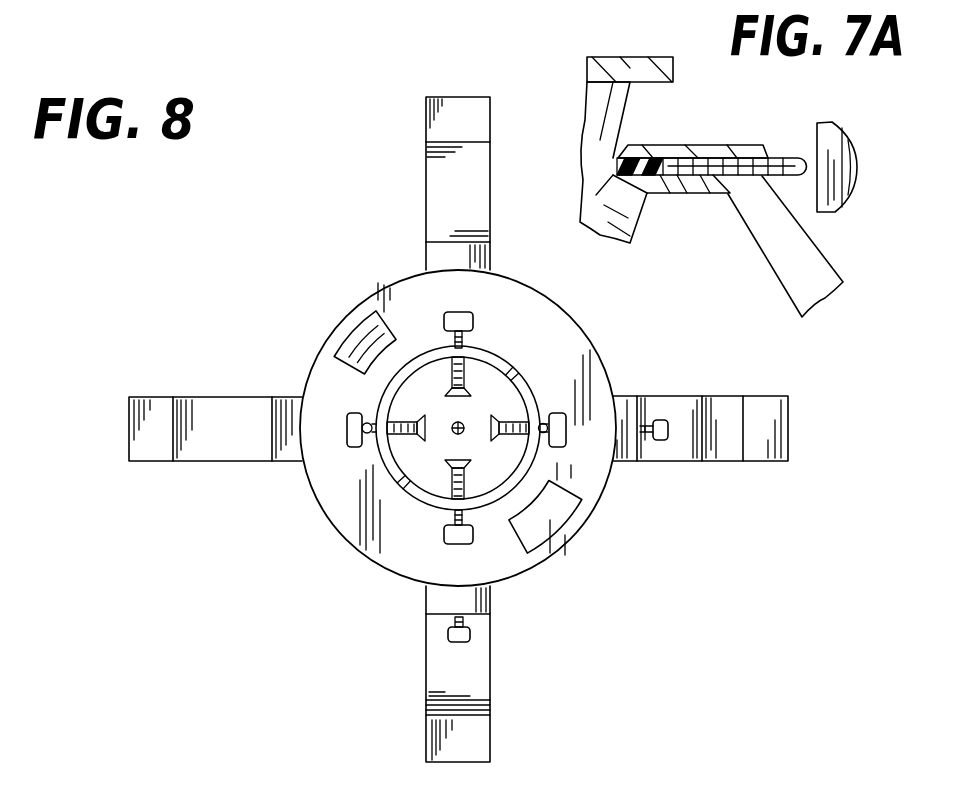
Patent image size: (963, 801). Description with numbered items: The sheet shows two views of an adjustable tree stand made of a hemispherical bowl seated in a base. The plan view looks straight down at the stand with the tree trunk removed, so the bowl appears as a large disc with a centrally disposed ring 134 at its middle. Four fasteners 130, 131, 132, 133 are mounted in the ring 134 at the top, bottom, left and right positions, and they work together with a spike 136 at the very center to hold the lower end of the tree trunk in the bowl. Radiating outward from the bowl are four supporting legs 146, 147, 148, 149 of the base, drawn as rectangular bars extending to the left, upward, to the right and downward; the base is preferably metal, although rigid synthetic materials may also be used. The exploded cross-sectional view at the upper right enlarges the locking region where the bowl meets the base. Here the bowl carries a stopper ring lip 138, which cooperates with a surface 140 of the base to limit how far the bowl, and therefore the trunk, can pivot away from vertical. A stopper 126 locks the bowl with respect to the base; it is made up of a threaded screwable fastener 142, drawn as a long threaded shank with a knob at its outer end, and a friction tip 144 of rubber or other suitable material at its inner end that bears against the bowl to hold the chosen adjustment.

In FIG. 7A, the stopper 126 is at (817, 125).
In FIG. 7A, the stopper ring lip 138 is at (673, 82).
In FIG. 7A, the surface 140 is at (675, 145).
In FIG. 7A, the threaded screwable fastener 142 is at (713, 178).
In FIG. 7A, the friction tip 144 is at (617, 160).
In FIG. 8, the fastener 130 is at (350, 446).
In FIG. 8, the fastener 131 is at (440, 312).
In FIG. 8, the fastener 132 is at (562, 410).
In FIG. 8, the fastener 133 is at (450, 540).
In FIG. 8, the centrally disposed ring 134 is at (538, 460).
In FIG. 8, the spike 136 is at (465, 422).
In FIG. 8, the supporting leg 146 is at (160, 397).
In FIG. 8, the supporting leg 147 is at (426, 122).
In FIG. 8, the supporting leg 148 is at (767, 396).
In FIG. 8, the supporting leg 149 is at (493, 695).